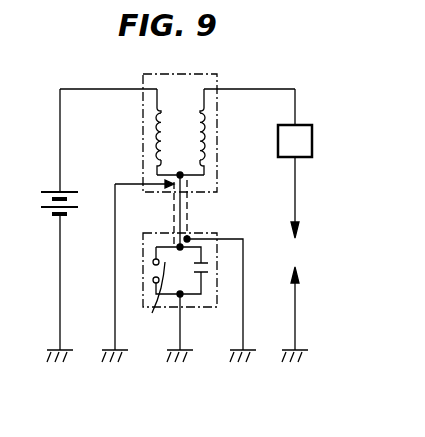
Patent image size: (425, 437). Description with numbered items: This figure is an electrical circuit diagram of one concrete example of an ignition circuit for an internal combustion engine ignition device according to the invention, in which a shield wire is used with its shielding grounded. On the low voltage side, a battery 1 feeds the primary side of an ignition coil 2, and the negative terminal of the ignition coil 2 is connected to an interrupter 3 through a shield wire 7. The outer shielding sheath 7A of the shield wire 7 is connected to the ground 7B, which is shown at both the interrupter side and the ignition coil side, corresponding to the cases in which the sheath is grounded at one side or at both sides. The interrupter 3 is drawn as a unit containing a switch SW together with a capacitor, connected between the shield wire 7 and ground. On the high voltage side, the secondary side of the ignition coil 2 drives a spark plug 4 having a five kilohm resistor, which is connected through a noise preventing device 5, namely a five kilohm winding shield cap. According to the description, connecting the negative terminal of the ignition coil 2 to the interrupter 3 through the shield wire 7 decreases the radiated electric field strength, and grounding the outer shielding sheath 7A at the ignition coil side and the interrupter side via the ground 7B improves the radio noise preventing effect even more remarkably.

The battery 1 is at (44, 197).
The ignition coil 2 is at (207, 73).
The interrupter 3 is at (205, 307).
The spark plug 4 is at (297, 251).
The noise preventing device 5 is at (312, 142).
The shield wire 7 is at (187, 223).
The outer shielding sheath 7A is at (190, 205).
The ground 7B is at (115, 266).
The switch SW is at (144, 301).